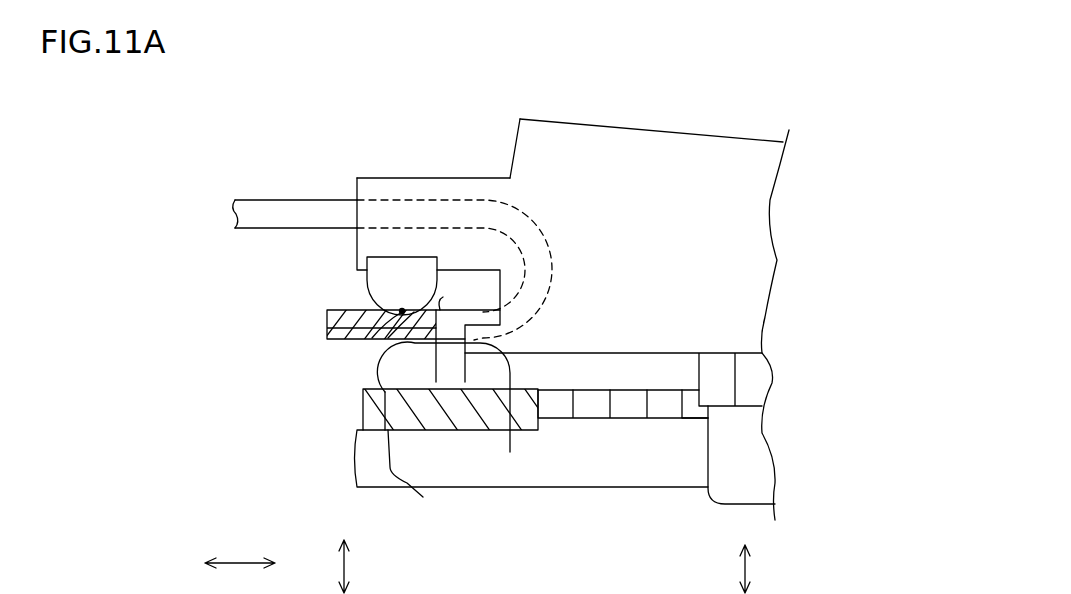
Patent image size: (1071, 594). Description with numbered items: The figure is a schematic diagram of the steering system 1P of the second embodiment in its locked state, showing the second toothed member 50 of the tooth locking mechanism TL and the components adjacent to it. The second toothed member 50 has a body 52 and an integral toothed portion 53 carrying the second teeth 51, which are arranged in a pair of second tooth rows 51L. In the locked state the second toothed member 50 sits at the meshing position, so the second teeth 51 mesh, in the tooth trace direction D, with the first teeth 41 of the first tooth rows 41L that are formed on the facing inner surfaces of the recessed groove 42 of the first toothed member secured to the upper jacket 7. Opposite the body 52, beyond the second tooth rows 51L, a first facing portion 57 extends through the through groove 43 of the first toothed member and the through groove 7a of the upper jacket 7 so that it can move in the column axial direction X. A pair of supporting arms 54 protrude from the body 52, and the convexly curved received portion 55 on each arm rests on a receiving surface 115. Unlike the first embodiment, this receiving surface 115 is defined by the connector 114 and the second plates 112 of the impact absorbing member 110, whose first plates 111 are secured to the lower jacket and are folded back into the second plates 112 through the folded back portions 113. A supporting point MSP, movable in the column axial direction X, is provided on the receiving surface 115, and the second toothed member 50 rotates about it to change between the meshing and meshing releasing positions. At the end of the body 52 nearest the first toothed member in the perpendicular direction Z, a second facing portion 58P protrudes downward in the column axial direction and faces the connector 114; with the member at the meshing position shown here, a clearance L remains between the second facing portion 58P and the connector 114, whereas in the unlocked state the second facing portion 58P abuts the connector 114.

The steering system 1P is at (682, 115).
The tooth locking mechanism TL is at (753, 128).
The second toothed member 50 is at (615, 128).
The body 52 is at (548, 188).
The toothed portion 53 is at (758, 217).
The second teeth 51 is at (750, 385).
The second tooth rows 51L is at (718, 352).
The first facing portion 57 is at (735, 447).
The upper jacket 7 is at (615, 488).
The through groove 7a is at (368, 462).
The first teeth 41 is at (663, 412).
The first tooth rows 41L is at (690, 420).
The recessed groove 42 is at (592, 410).
The through groove 43 is at (547, 430).
The second facing portion 58P is at (510, 452).
The impact absorbing member 110 is at (323, 198).
The first plates 111 is at (262, 205).
The second plates 112 is at (417, 460).
The folded back portions 113 is at (540, 270).
The connector 114 is at (405, 340).
The receiving surface 115 is at (353, 308).
The supporting arms 54 is at (393, 275).
The received portions 55 is at (443, 297).
The supporting point MSP is at (335, 327).
The clearance L is at (397, 372).
The column axial direction X is at (240, 563).
The perpendicular direction Z is at (350, 563).
The tooth trace direction D is at (750, 568).